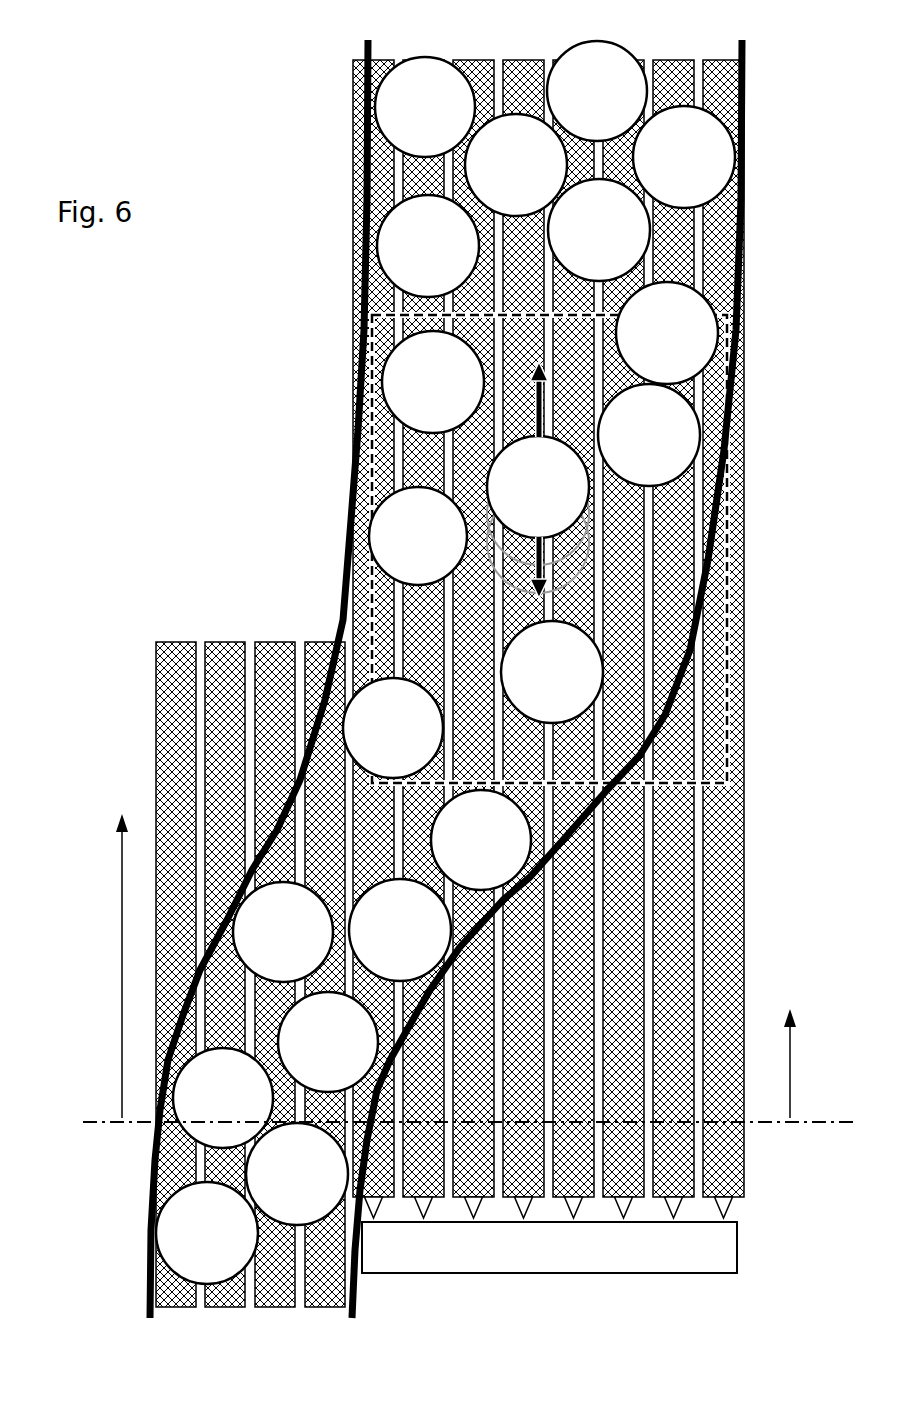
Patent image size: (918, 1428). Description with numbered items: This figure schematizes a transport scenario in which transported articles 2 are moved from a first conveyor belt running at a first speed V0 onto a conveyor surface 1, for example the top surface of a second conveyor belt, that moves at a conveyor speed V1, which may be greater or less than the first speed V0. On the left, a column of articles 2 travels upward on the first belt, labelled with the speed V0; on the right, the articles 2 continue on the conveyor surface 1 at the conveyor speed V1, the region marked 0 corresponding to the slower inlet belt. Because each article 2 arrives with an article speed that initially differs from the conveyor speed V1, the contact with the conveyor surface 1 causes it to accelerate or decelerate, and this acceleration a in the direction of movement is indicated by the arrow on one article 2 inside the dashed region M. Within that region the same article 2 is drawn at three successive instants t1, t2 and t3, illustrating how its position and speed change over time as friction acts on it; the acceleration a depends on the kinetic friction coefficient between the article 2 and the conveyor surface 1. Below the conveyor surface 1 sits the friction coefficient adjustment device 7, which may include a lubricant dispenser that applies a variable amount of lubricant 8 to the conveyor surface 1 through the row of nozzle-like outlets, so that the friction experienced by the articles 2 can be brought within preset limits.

The inlet channel 0 is at (203, 1165).
The conveyor surface 1 is at (628, 665).
The article 2 is at (214, 1244).
The friction coefficient adjustment device 7 is at (541, 1259).
The lubricant 8 is at (746, 1204).
The measurement region M is at (372, 385).
The object position at time t1 is at (588, 562).
The object position at time t2 is at (592, 522).
The object position at time t3 is at (590, 485).
The first speed V0 is at (122, 934).
The conveyor speed V1 is at (790, 1049).
The acceleration a is at (546, 567).